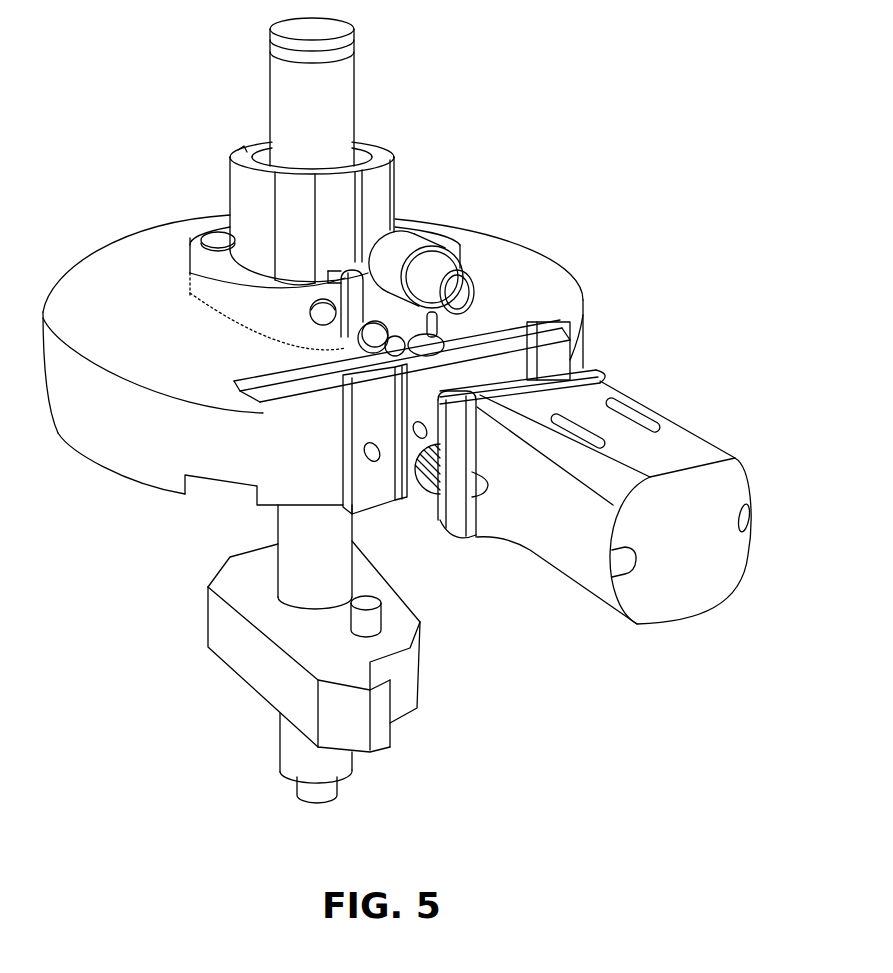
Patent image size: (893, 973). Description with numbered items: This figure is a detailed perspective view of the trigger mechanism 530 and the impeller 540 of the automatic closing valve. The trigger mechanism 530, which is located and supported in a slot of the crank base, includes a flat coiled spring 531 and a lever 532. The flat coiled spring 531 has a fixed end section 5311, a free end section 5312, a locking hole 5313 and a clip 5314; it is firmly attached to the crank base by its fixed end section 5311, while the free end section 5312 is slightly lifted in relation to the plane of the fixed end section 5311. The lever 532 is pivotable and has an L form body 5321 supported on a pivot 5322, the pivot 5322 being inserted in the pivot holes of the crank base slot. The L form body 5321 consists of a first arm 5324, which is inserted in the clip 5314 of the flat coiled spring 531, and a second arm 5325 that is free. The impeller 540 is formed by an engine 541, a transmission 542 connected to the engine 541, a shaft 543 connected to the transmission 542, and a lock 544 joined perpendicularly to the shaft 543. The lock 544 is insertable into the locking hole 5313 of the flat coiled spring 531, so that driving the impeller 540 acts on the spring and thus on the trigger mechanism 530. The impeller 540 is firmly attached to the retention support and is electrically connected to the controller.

The trigger mechanism 530 is at (437, 213).
The flat coiled spring 531 is at (283, 380).
The fixed end section 5311 is at (260, 387).
The lever 532 is at (337, 327).
The L form body 5321 is at (366, 310).
The pivot 5322 is at (392, 347).
The first arm 5324 is at (395, 328).
The second arm 5325 is at (365, 287).
The free end section 5312 is at (456, 284).
The locking hole 5313 is at (415, 350).
The clip 5314 is at (438, 332).
The lock 544 is at (420, 343).
The impeller 540 is at (670, 425).
The engine 541 is at (663, 605).
The transmission 542 is at (460, 535).
The shaft 543 is at (470, 395).